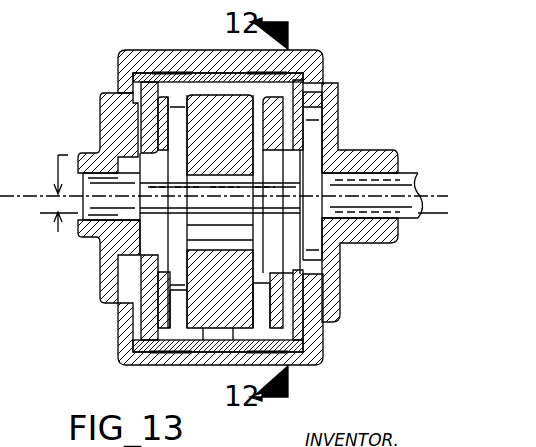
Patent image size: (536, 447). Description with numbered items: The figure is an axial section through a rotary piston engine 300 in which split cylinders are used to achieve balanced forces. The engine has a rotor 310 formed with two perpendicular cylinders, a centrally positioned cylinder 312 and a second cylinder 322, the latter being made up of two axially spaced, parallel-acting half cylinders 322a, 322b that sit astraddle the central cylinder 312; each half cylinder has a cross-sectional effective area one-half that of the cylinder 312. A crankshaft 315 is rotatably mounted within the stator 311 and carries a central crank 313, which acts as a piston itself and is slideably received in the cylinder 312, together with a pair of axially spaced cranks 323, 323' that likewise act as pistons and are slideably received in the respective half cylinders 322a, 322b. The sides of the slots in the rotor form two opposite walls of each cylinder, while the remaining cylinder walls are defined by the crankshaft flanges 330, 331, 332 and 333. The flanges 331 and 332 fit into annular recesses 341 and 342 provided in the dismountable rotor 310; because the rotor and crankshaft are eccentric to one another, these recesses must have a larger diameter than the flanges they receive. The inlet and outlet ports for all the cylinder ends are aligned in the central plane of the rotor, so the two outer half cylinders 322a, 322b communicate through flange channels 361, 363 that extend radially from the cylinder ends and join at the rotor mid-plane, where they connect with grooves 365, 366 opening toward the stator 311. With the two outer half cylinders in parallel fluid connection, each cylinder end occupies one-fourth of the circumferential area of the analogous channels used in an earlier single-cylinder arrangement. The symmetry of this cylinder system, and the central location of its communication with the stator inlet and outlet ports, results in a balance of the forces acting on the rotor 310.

The rotary piston engine 300 is at (366, 46).
The rotor 310 is at (162, 79).
The stator 311 is at (118, 62).
The cylinder 312 is at (220, 289).
The central crank 313 is at (142, 252).
The crankshaft 315 is at (410, 173).
The cylinder 322 is at (275, 241).
The half cylinder 322a is at (140, 275).
The half cylinder 322b is at (302, 252).
The crank 323 is at (94, 174).
The crank 323' is at (349, 214).
The crankshaft flange 330 is at (120, 105).
The crankshaft flange 331 is at (178, 118).
The crankshaft flange 332 is at (268, 110).
The crankshaft flange 333 is at (322, 114).
The annular recess 341 is at (178, 300).
The annular recess 342 is at (290, 300).
The flange channel 361 is at (148, 125).
The flange channel 363 is at (153, 320).
The groove 365 is at (218, 78).
The groove 366 is at (217, 347).